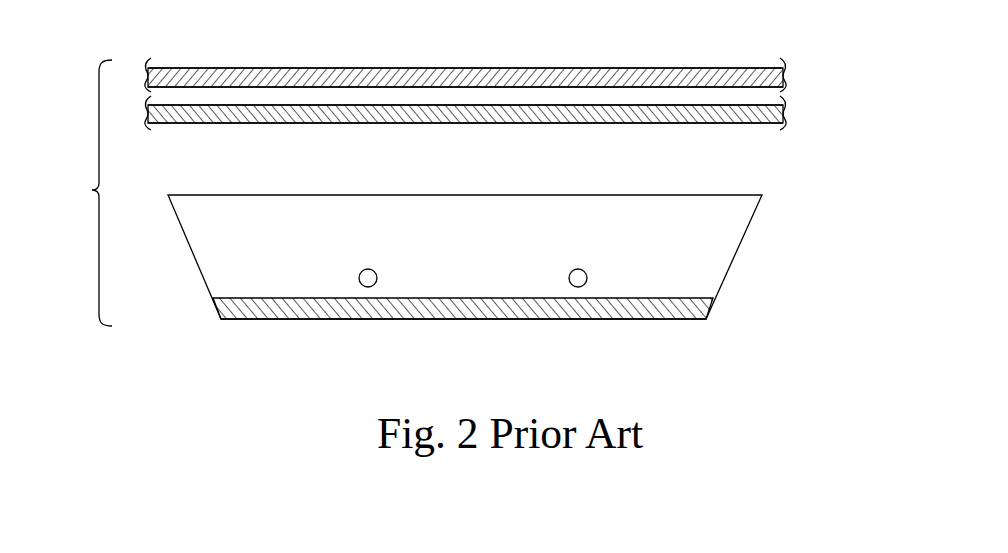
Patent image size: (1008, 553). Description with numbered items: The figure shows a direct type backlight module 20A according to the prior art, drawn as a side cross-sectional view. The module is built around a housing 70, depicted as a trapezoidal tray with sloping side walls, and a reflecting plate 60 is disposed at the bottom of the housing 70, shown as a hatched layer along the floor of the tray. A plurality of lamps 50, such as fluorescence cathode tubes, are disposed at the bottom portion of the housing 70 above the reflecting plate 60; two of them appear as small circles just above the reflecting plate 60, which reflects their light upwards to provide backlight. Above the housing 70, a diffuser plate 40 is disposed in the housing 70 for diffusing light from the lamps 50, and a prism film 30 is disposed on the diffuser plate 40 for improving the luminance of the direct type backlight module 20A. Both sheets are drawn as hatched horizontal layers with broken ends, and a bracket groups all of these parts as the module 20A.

The direct type backlight module 20A is at (92, 190).
The prism film 30 is at (752, 68).
The diffuser plate 40 is at (748, 124).
The lamps 50 is at (361, 285).
The reflecting plate 60 is at (713, 307).
The housing 70 is at (810, 231).